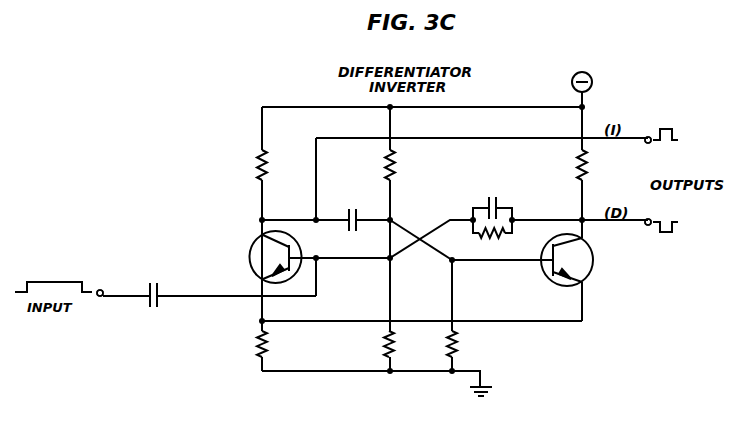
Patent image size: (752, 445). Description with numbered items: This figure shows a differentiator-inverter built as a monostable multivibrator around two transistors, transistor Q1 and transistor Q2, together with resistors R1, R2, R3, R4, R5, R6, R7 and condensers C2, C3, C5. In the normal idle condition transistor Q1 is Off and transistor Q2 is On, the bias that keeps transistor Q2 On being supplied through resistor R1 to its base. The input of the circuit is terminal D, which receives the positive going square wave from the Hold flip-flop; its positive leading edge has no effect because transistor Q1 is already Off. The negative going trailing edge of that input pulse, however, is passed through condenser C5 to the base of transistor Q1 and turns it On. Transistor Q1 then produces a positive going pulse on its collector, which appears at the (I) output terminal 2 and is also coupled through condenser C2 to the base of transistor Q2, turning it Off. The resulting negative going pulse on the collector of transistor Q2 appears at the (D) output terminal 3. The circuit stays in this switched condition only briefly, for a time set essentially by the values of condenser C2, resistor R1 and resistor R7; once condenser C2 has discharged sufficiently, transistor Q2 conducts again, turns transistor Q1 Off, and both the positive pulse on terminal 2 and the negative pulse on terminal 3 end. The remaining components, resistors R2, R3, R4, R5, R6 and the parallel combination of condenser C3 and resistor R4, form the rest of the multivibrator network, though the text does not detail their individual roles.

The resistor R1 is at (403, 165).
The resistor R2 is at (275, 165).
The resistor R3 is at (596, 165).
The resistor R4 is at (492, 240).
The resistor R5 is at (270, 345).
The resistor R6 is at (381, 345).
The resistor R7 is at (467, 344).
The condenser C2 is at (369, 214).
The condenser C3 is at (497, 203).
The condenser C5 is at (151, 287).
The transistor Q1 is at (262, 257).
The transistor Q2 is at (579, 260).
The input terminal D is at (102, 286).
The (I) output terminal 2 is at (646, 133).
The (D) output terminal 3 is at (646, 231).